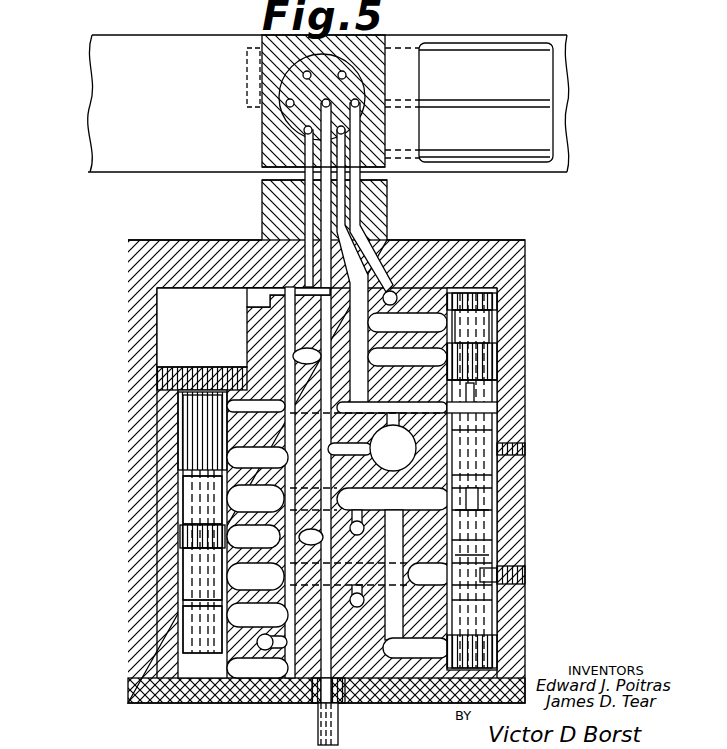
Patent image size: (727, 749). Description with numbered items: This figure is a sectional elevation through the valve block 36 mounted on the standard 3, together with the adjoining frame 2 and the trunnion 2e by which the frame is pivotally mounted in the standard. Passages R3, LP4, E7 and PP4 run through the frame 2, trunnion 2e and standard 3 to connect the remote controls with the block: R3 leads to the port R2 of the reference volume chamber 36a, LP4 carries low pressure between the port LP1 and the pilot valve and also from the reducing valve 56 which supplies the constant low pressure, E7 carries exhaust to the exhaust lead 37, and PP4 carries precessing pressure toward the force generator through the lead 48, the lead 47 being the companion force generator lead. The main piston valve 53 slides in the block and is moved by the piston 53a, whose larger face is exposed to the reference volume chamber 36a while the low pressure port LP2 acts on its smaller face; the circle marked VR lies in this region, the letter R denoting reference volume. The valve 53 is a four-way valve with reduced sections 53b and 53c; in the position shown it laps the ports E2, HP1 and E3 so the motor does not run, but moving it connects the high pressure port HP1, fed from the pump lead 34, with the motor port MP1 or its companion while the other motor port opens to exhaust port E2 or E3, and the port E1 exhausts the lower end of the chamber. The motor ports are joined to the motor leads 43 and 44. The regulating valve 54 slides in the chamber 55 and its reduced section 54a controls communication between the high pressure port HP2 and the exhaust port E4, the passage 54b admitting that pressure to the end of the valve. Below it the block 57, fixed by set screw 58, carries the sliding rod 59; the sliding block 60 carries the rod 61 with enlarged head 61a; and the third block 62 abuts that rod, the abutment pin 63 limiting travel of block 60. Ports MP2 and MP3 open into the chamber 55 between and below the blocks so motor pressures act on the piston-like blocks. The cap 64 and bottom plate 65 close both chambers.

The frame 2 is at (100, 91).
The trunnion 2e is at (260, 62).
The standard 3 is at (387, 197).
The lead 34 is at (317, 722).
The valve block 36 is at (120, 429).
The reference volume chamber 36a is at (197, 330).
The exhaust lead 37 is at (223, 640).
The motor lead 43 is at (465, 530).
The motor lead 44 is at (357, 607).
The lead 47 is at (473, 386).
The lead 48 is at (449, 287).
The main piston valve 53 is at (203, 452).
The piston 53a is at (187, 366).
The reduced section 53b is at (200, 497).
The reduced section 53c is at (203, 573).
The regulating valve 54 is at (468, 365).
The reduced section 54a is at (470, 330).
The passage 54b is at (463, 301).
The elongated chamber 55 is at (487, 493).
The reducing valve 56 is at (480, 458).
The block 57 is at (480, 470).
The set screw 58 is at (507, 447).
The rod 59 is at (477, 393).
The block 60 is at (473, 547).
The rod 61 is at (495, 587).
The enlarged head 61a is at (477, 505).
The block 62 is at (470, 622).
The abutment pin 63 is at (523, 575).
The cap 64 is at (193, 248).
The bottom plate 65 is at (367, 692).
The exhaust port E1 is at (243, 665).
The exhaust port E2 is at (257, 458).
The exhaust port E3 is at (257, 615).
The exhaust port E4 is at (407, 358).
The exhaust passage E7 is at (323, 217).
The high pressure port HP1 is at (253, 536).
The high pressure port HP2 is at (407, 323).
The low pressure port LP1 is at (440, 405).
The low pressure port LP2 is at (250, 407).
The low pressure passage LP4 is at (357, 222).
The motor pressure port MP1 is at (255, 537).
The motor pressure port MP2 is at (394, 536).
The motor pressure port MP3 is at (416, 648).
The precessing pressure passage PP4 is at (395, 262).
The reference volume port R2 is at (255, 297).
The reference volume passages R3 is at (307, 193).
The vent restriction VR is at (387, 436).